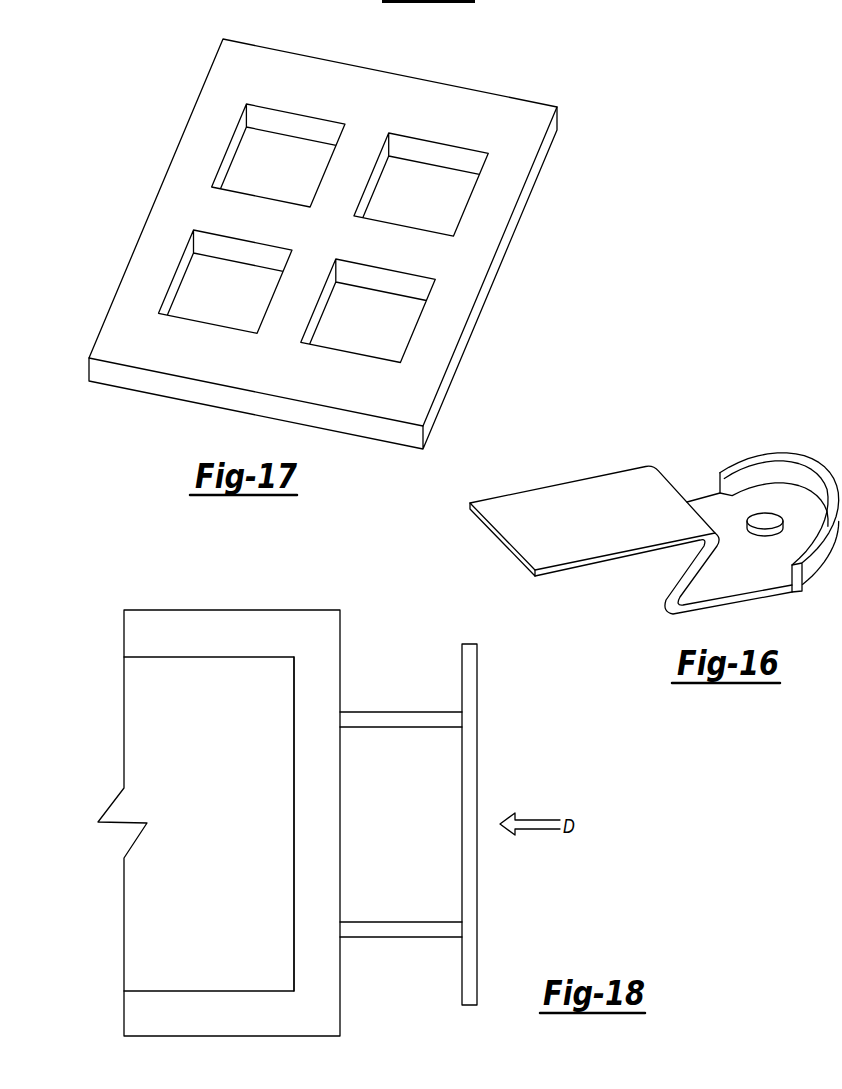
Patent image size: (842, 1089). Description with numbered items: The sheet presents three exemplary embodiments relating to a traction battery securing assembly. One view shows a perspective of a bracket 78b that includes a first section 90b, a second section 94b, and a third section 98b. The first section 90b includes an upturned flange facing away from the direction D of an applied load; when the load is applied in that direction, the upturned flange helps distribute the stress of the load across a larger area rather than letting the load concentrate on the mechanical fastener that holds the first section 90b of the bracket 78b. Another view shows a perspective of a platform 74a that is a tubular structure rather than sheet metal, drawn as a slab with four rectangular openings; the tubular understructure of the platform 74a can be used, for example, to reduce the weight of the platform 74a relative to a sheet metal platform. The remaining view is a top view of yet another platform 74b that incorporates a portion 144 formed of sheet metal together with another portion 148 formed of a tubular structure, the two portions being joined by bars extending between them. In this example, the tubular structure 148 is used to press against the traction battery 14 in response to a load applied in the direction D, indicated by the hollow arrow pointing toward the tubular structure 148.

In FIG. 17, the platform 74a is at (447, 100).
In FIG. 16, the bracket 78b is at (654, 505).
In FIG. 16, the second section 94b is at (589, 494).
In FIG. 16, the bent leg of clip 98b is at (662, 576).
In FIG. 16, the first section 90b is at (729, 581).
In FIG. 18, the traction battery 14 is at (147, 723).
In FIG. 18, the portion formed of a sheet metal 144 is at (217, 610).
In FIG. 18, the platform 74b is at (303, 610).
In FIG. 18, the portion formed of a tubular structure 148 is at (468, 673).